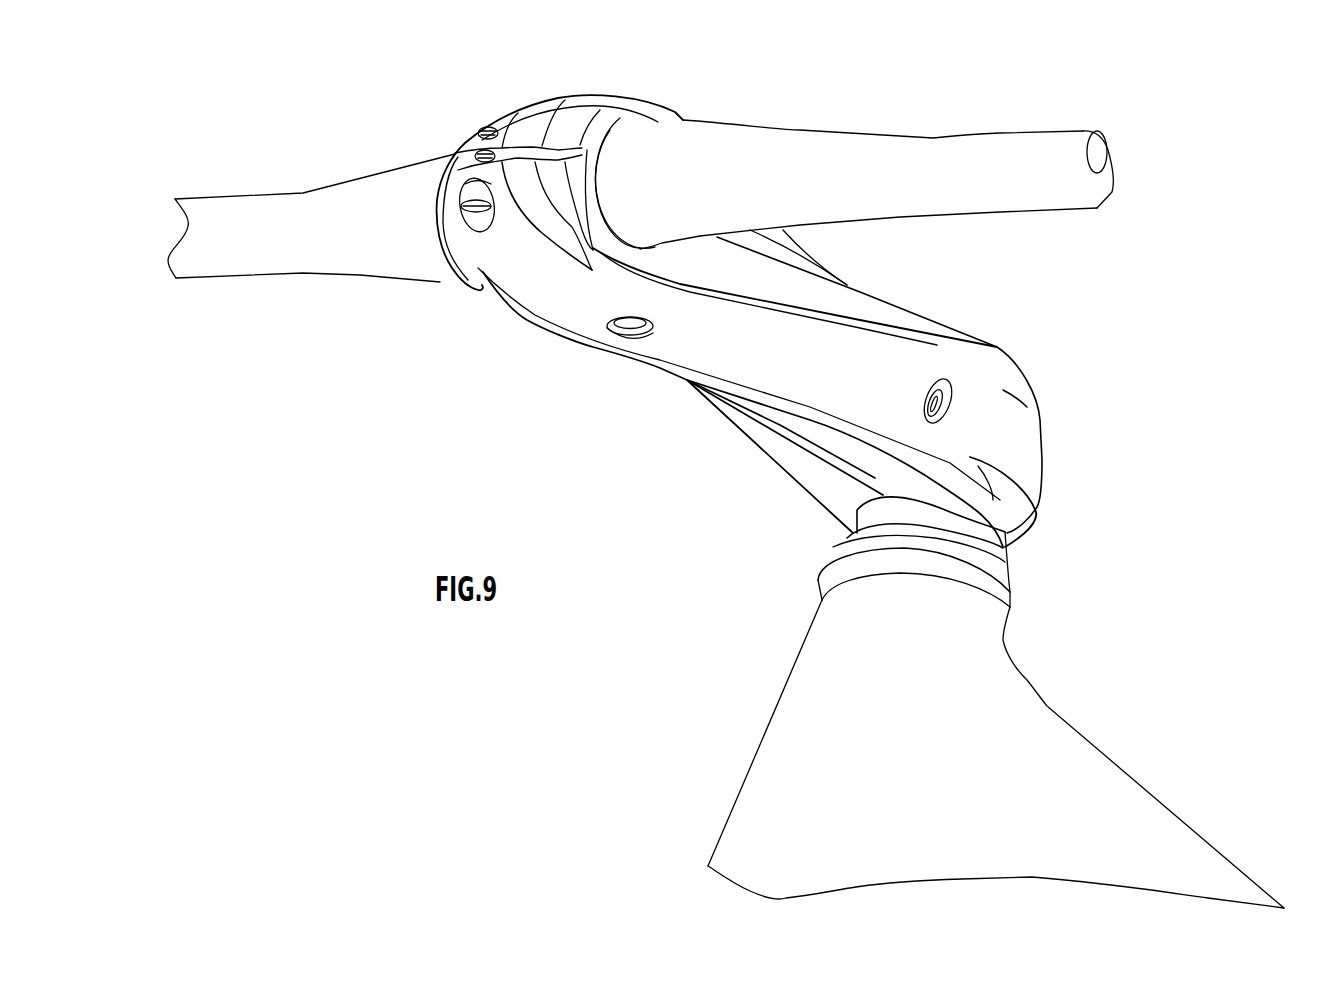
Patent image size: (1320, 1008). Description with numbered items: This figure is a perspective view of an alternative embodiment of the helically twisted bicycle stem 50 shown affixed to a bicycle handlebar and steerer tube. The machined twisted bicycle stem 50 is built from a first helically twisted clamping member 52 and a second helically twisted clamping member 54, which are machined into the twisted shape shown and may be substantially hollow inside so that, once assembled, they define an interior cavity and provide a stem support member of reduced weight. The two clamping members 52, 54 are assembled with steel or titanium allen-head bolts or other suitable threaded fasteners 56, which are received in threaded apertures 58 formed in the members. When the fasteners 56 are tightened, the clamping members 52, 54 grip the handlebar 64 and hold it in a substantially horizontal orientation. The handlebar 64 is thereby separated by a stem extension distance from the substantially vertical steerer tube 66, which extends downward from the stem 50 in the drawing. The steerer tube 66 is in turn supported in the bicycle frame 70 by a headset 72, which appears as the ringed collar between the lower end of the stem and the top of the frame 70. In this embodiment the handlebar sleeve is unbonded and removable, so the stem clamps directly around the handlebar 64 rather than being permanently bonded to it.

The twisted bicycle stem 50 is at (545, 305).
The first helically twisted clamping member 52 is at (550, 113).
The second helically twisted clamping member 54 is at (727, 372).
The threaded fasteners 56 is at (473, 217).
The threaded apertures 58 is at (468, 147).
The handlebar 64 is at (378, 247).
The steerer tube 66 is at (1050, 405).
The bicycle frame 70 is at (1005, 712).
The headset 72 is at (987, 558).